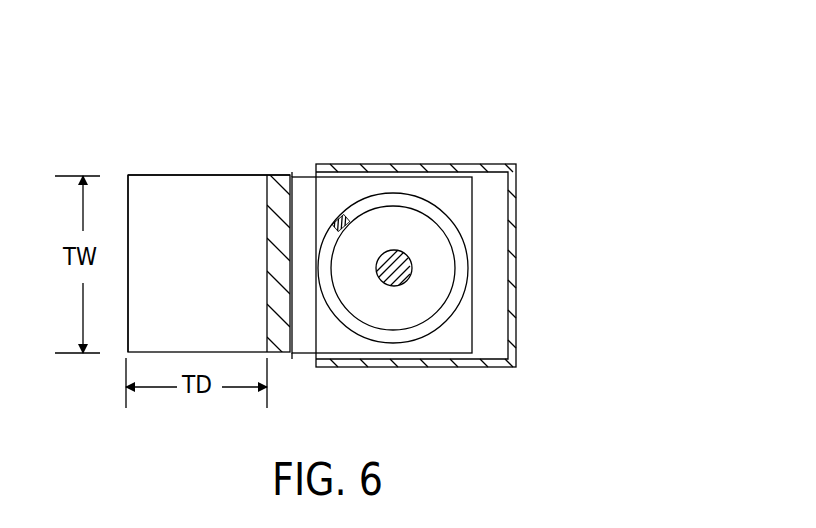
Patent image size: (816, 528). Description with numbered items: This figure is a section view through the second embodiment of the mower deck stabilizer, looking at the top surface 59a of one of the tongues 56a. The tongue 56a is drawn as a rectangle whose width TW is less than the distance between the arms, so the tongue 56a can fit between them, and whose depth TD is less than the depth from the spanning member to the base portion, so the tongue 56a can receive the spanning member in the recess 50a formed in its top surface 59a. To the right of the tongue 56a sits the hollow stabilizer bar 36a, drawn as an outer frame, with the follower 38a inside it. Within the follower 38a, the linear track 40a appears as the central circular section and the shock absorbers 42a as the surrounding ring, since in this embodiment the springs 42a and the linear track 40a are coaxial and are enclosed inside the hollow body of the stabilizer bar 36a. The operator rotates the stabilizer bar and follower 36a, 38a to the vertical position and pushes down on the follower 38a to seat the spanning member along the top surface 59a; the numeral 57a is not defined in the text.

The stabilizer bar 36a is at (495, 167).
The follower 38a is at (448, 195).
The linear track 40a is at (412, 272).
The shock absorbers 42a is at (448, 232).
The recess 50a is at (233, 190).
The tongue 56a is at (192, 176).
The tab side edge 57a is at (128, 293).
The top surface 59a is at (212, 289).